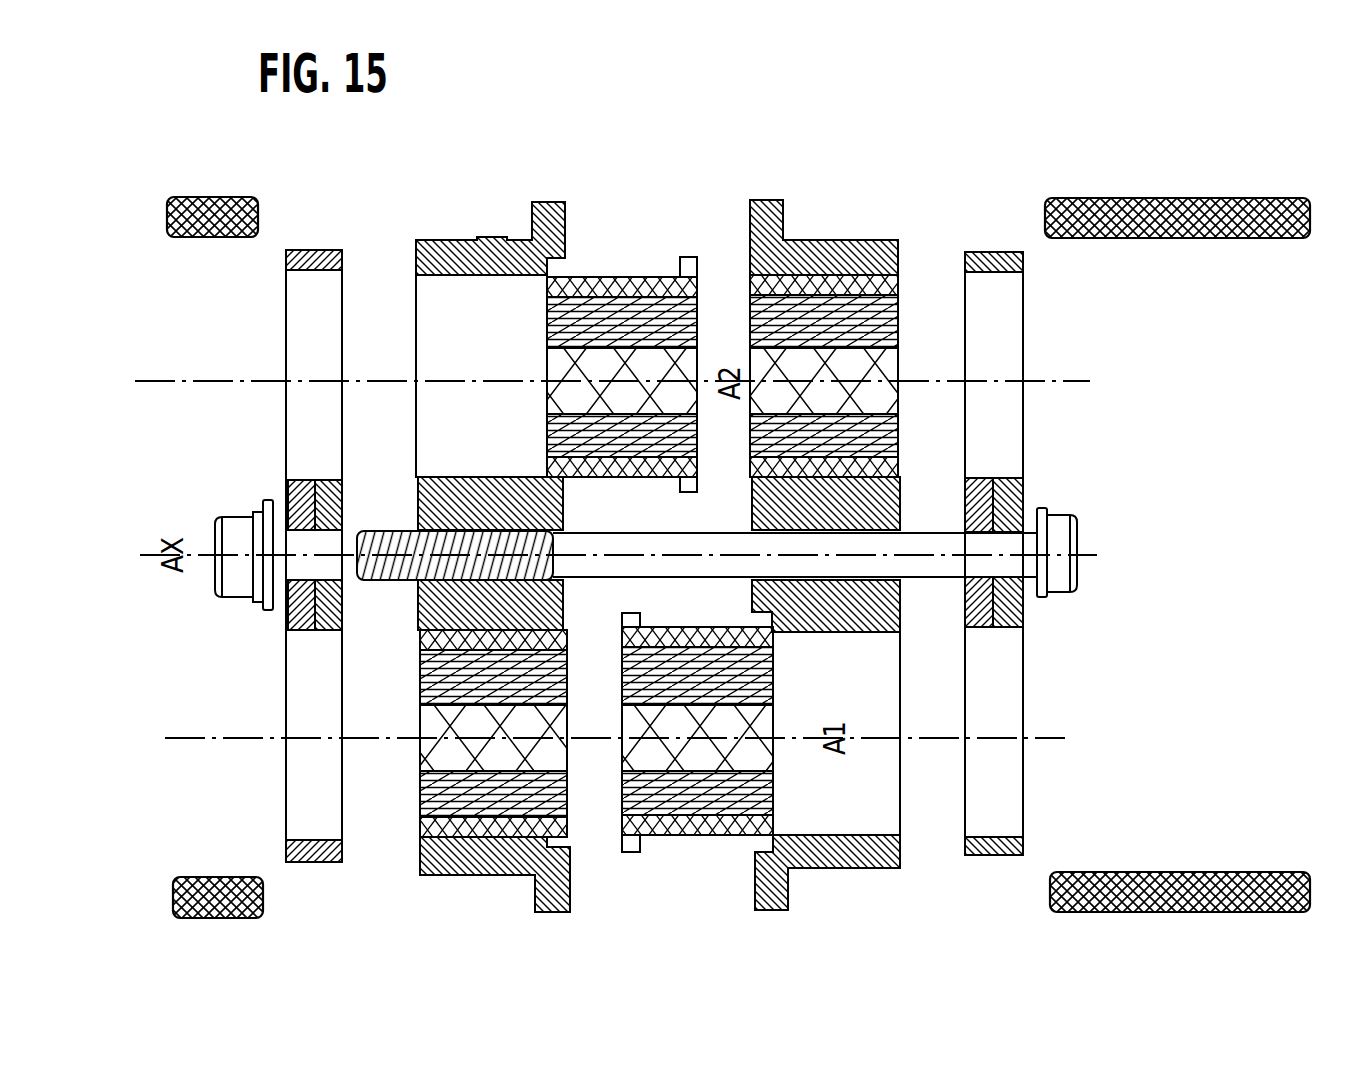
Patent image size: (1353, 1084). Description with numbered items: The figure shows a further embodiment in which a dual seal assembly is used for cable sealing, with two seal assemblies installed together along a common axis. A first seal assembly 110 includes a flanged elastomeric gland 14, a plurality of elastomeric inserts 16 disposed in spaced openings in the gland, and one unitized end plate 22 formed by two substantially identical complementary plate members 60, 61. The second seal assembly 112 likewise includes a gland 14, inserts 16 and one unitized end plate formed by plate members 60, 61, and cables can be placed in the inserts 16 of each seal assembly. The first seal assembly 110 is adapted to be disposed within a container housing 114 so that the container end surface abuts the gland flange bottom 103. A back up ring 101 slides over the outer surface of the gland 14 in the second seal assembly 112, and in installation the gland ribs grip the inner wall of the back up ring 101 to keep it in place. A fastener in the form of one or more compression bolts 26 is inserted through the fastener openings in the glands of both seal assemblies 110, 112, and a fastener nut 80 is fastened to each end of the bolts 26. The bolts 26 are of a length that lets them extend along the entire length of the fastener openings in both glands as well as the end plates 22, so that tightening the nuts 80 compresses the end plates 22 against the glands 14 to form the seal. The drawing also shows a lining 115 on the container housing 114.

The flanged elastomeric gland 14 is at (490, 238).
The elastomeric inserts 16 is at (600, 277).
The unitized end plate 22 is at (1055, 305).
The compression bolts 26 is at (1062, 508).
The plate member 60 is at (288, 612).
The plate member 61 is at (342, 604).
The fastener nut 80 is at (232, 517).
The back up ring 101 is at (190, 197).
The gland flange bottom 103 is at (533, 215).
The first seal assembly 110 is at (840, 240).
The second seal assembly 112 is at (436, 240).
The container housing 114 is at (1146, 529).
The friction lining 115 is at (1045, 216).